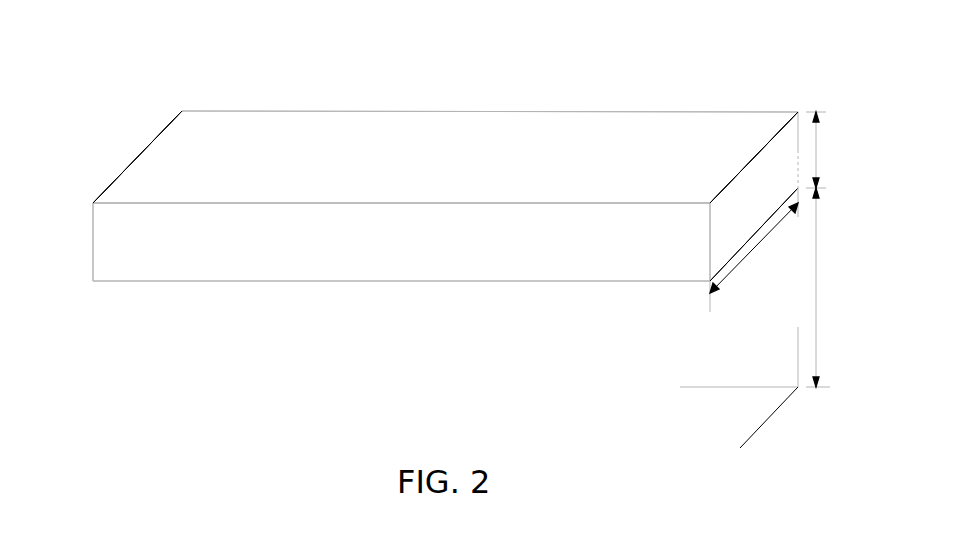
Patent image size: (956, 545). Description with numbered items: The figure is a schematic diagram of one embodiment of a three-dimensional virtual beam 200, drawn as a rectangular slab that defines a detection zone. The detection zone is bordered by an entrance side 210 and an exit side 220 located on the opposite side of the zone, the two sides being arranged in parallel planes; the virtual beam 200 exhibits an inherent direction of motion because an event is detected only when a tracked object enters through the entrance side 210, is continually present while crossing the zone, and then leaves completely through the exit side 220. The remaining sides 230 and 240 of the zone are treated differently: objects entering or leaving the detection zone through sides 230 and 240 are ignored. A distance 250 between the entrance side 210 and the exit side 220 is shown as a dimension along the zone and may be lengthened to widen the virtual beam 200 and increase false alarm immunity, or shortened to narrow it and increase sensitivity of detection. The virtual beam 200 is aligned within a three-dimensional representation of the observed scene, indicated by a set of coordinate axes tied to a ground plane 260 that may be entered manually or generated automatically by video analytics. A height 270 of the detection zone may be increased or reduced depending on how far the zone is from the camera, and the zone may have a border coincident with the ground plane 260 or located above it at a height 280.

The three-dimensional virtual beam 200 is at (555, 67).
The entrance side 210 is at (457, 245).
The exit side 220 is at (457, 111).
The side 230 is at (768, 212).
The side 240 is at (137, 156).
The distance 250 is at (738, 263).
The ground plane 260 is at (717, 440).
The height 270 is at (818, 154).
The height 280 is at (818, 290).